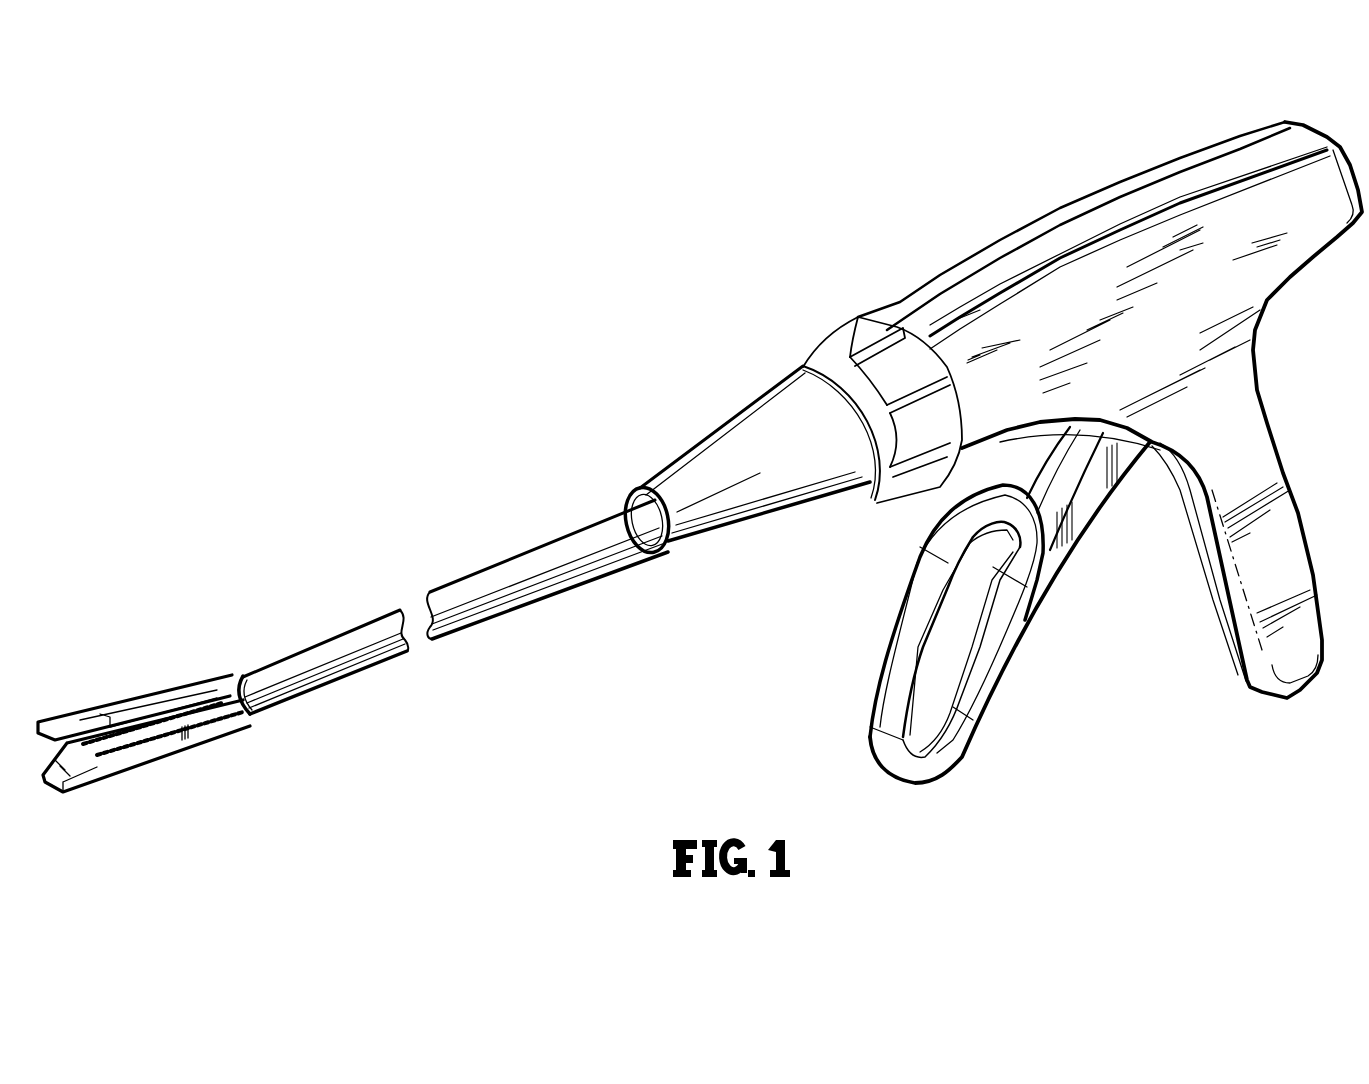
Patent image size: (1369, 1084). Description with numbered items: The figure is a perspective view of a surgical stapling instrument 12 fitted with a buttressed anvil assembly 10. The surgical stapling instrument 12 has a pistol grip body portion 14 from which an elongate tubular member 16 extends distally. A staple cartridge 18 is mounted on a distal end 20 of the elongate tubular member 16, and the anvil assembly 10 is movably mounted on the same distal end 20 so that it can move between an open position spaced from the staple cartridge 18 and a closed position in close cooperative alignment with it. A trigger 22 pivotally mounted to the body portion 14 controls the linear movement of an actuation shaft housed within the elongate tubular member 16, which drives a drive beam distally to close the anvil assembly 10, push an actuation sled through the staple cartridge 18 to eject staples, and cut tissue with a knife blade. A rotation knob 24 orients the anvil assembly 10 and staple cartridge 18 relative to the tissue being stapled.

The anvil assembly 10 is at (58, 706).
The surgical stapling instrument 12 is at (903, 247).
The pistol grip body portion 14 is at (1055, 245).
The elongate tubular member 16 is at (377, 668).
The staple cartridge 18 is at (143, 760).
The distal end 20 is at (263, 710).
The trigger 22 is at (1025, 630).
The rotation knob 24 is at (805, 360).